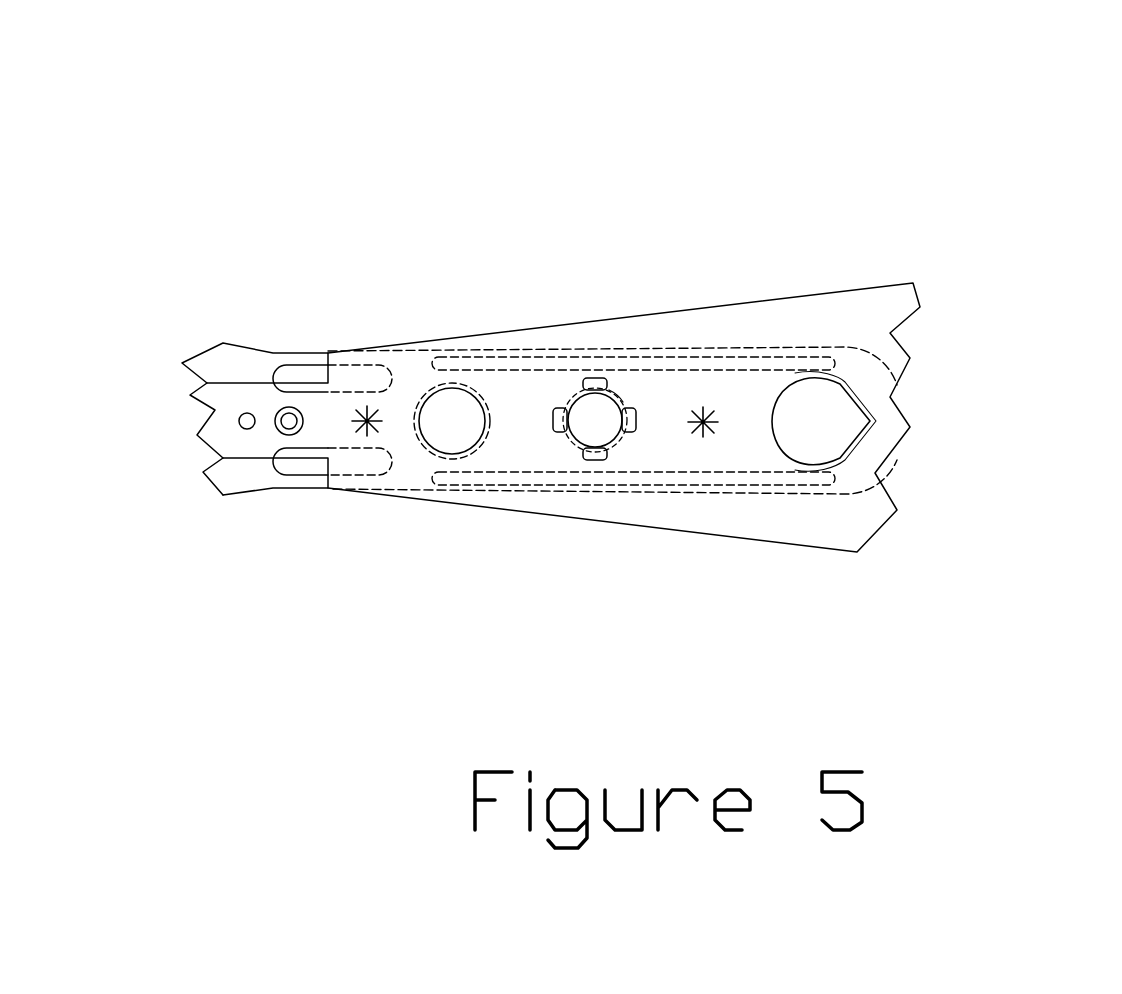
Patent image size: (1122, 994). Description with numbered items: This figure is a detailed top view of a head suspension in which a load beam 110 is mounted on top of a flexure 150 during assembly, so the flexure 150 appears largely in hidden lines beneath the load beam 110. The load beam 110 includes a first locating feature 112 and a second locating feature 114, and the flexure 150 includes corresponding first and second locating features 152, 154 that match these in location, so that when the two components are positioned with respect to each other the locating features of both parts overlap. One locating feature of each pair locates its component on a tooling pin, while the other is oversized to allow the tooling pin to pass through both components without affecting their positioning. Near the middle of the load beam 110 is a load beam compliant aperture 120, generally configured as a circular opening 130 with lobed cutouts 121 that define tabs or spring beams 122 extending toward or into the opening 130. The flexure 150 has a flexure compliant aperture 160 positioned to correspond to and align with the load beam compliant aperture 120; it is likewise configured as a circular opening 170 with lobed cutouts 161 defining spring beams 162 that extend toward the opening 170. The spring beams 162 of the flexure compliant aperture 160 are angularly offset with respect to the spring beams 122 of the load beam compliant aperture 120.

The load beam 110 is at (840, 300).
The first locating feature 112 is at (857, 447).
The second locating feature 114 is at (417, 418).
The load beam compliant aperture 120 is at (590, 380).
The lobed cutouts 121 is at (637, 417).
The spring beams 122 is at (615, 397).
The circular opening 130 is at (605, 420).
The flexure 150 is at (860, 490).
The first locating feature 152 is at (855, 393).
The second locating feature 154 is at (422, 383).
The flexure compliant aperture 160 is at (570, 393).
The lobed cutouts 161 is at (570, 442).
The spring beams 162 is at (552, 420).
The circular opening 170 is at (587, 433).